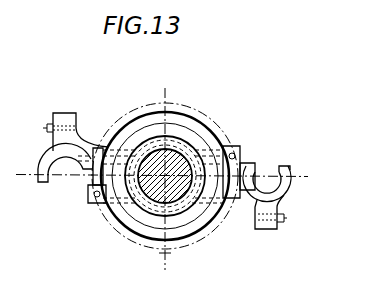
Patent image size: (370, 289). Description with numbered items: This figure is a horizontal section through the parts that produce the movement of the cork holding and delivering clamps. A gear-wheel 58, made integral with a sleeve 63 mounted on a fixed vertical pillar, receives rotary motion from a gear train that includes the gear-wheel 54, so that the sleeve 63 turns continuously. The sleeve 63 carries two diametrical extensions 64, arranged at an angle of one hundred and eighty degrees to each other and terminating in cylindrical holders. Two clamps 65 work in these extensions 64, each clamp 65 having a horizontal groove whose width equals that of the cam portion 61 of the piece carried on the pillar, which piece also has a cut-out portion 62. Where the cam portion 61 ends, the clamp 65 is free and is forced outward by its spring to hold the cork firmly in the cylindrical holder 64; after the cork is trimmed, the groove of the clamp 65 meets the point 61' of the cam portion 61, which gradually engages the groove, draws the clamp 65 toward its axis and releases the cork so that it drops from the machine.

The gear-wheel 54 is at (165, 176).
The gear-wheel 58 is at (151, 228).
The cam portion 61 is at (162, 213).
The point of the cam portion 61' is at (165, 126).
The cut-out portion 62 is at (187, 117).
The sleeve 63 is at (172, 208).
The extensions 64 is at (34, 170).
The clamps 65 is at (85, 166).